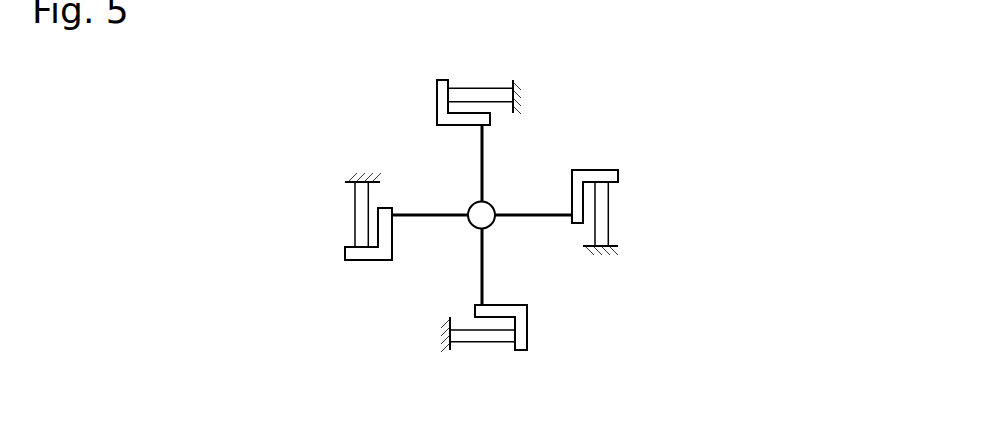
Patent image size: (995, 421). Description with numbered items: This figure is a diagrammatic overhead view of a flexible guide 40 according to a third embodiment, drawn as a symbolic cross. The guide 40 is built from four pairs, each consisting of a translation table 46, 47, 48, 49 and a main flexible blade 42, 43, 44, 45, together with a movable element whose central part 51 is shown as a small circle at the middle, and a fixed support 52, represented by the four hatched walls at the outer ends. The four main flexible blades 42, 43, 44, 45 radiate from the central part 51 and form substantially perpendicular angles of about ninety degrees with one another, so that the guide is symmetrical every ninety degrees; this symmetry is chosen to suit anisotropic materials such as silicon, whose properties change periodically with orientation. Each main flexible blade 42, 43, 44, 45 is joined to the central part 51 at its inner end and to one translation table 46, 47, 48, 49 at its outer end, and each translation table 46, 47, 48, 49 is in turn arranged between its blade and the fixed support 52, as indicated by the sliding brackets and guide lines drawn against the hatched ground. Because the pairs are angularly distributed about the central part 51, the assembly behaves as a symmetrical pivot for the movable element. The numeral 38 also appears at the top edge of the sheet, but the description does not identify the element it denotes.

The vehicle seat 38 is at (458, 5).
The flexible guide 40 is at (298, 143).
The main flexible blade 42 is at (530, 218).
The main flexible blade 43 is at (483, 152).
The main flexible blade 44 is at (420, 218).
The main flexible blade 45 is at (483, 263).
The translation table 46 is at (518, 358).
The translation table 47 is at (412, 89).
The translation table 48 is at (640, 203).
The translation table 49 is at (328, 215).
The central part 51 is at (487, 213).
The fixed support 52 is at (520, 83).